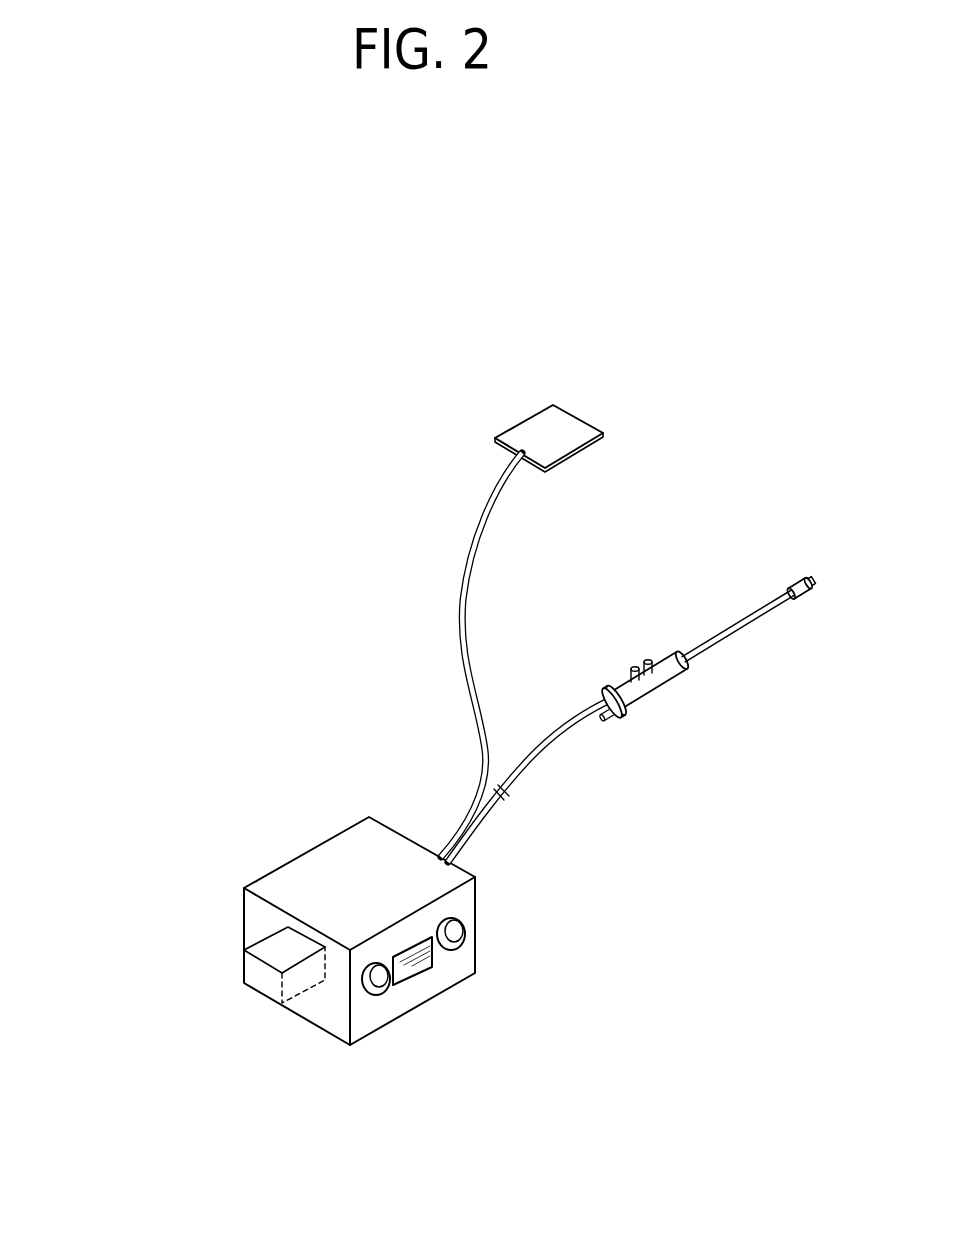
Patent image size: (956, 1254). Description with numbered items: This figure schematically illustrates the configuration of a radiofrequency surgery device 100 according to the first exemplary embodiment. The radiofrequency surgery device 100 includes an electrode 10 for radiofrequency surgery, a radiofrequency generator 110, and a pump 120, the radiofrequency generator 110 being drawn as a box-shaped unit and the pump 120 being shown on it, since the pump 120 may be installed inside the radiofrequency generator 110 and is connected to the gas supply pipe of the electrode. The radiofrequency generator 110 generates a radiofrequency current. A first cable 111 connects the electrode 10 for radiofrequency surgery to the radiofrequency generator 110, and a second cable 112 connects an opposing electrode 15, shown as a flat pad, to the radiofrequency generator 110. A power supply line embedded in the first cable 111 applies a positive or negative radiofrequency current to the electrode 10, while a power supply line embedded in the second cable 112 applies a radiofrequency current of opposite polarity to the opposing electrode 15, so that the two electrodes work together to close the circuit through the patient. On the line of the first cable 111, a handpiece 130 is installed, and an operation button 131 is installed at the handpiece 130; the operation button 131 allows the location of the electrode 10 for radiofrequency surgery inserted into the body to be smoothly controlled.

The radiofrequency surgery device 100 is at (202, 440).
The radiofrequency generator 110 is at (327, 857).
The pump 120 is at (267, 950).
The opposing electrode 15 is at (528, 418).
The second cable 112 is at (466, 665).
The first cable 111 is at (543, 752).
The handpiece 130 is at (673, 672).
The operation button 131 is at (631, 667).
The electrode for radiofrequency surgery 10 is at (800, 580).